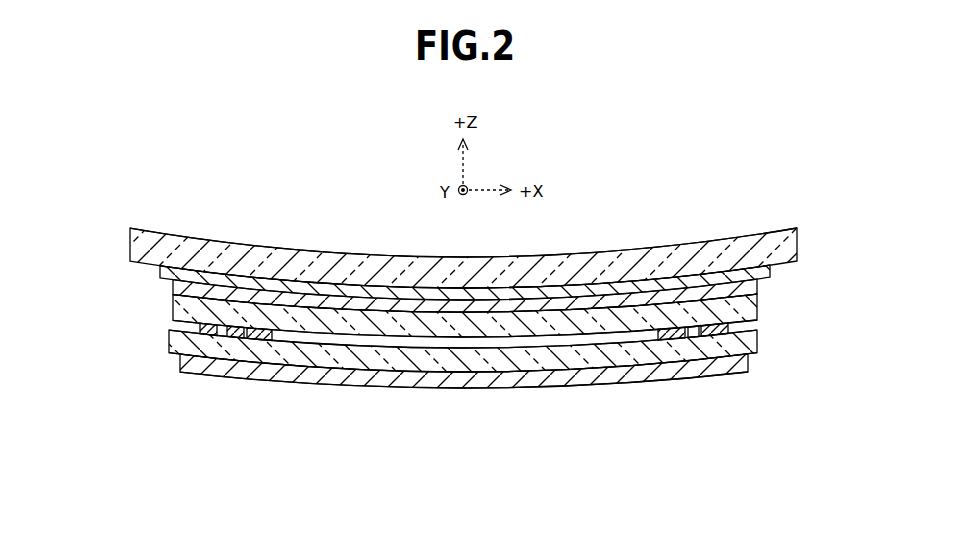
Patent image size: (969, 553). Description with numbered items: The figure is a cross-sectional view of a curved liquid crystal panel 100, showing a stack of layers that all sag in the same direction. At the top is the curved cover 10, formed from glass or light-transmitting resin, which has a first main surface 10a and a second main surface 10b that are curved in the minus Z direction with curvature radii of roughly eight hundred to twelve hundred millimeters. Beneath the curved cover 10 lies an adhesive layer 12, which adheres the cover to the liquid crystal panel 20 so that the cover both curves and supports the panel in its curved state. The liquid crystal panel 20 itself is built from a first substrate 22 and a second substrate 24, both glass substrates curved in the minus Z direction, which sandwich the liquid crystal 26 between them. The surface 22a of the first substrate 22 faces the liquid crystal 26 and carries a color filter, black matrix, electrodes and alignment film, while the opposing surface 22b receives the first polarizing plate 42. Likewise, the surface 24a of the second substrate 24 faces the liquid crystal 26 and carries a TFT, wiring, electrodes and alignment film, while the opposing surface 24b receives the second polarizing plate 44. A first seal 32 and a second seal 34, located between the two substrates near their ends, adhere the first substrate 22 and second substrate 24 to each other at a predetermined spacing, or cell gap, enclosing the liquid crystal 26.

The curved liquid crystal panel 100 is at (700, 193).
The curved cover 10 is at (798, 241).
The first main surface 10a is at (240, 276).
The second main surface 10b is at (195, 238).
The adhesive layer 12 is at (158, 268).
The liquid crystal panel 20 is at (156, 339).
The first substrate 22 is at (757, 311).
The surface 22a is at (327, 333).
The surface 22b is at (296, 302).
The second substrate 24 is at (757, 341).
The surface 24a is at (405, 348).
The surface 24b is at (350, 370).
The liquid crystal 26 is at (483, 389).
The first seal 32 is at (258, 340).
The second seal 34 is at (225, 337).
The first polarizing plate 42 is at (757, 287).
The second polarizing plate 44 is at (748, 363).